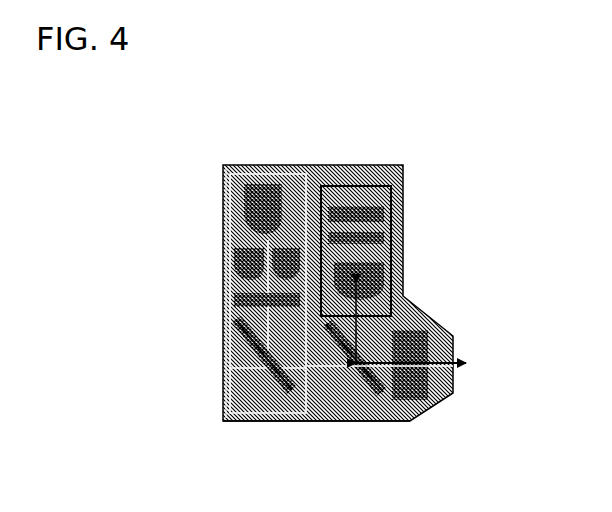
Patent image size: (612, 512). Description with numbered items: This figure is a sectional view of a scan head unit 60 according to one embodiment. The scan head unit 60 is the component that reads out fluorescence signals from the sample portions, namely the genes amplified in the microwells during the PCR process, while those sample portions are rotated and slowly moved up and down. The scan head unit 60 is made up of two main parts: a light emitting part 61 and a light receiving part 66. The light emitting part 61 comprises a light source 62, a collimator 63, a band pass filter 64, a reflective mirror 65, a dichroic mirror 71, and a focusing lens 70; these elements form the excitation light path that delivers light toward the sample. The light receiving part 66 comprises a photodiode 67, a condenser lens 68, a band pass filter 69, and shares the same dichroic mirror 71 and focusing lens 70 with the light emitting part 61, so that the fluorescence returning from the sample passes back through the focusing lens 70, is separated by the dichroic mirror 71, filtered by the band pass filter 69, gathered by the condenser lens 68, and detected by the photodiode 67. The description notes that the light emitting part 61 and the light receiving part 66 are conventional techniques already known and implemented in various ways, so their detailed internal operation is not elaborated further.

The scan head unit 60 is at (300, 157).
The light emitting part 61 is at (233, 157).
The light source 62 is at (215, 185).
The collimator 63 is at (215, 250).
The band pass filter 64 is at (218, 295).
The reflective mirror 65 is at (218, 345).
The light receiving part 66 is at (357, 157).
The photodiode 67 is at (395, 210).
The condenser lens 68 is at (395, 245).
The band pass filter 69 is at (395, 288).
The focusing lens 70 is at (440, 330).
The dichroic mirror 71 is at (351, 414).